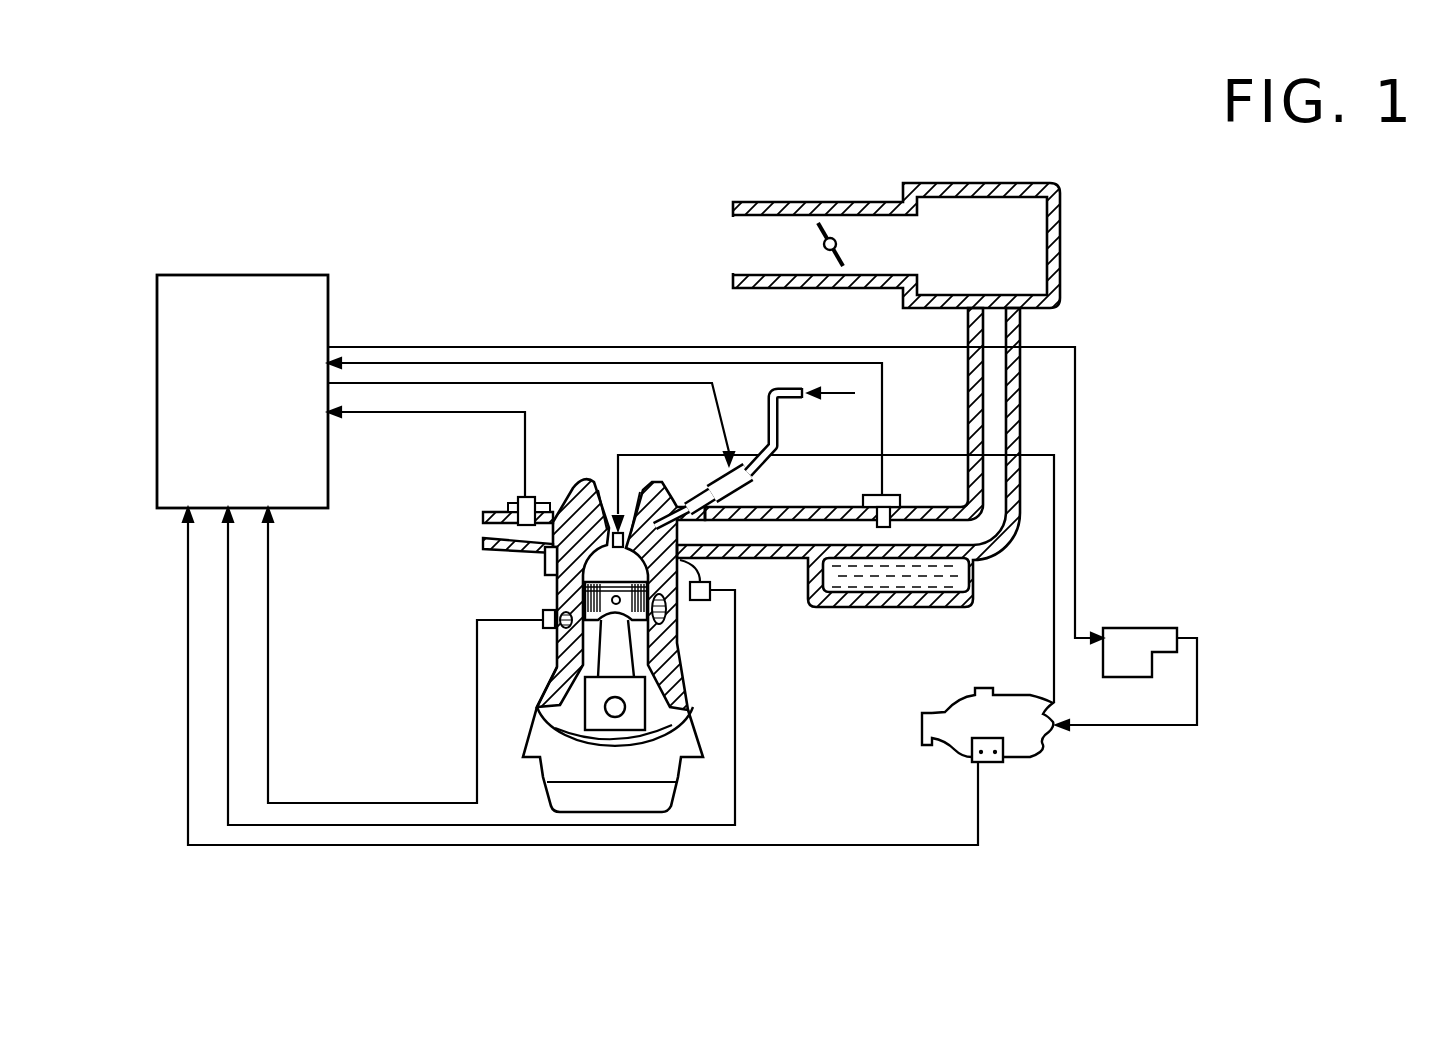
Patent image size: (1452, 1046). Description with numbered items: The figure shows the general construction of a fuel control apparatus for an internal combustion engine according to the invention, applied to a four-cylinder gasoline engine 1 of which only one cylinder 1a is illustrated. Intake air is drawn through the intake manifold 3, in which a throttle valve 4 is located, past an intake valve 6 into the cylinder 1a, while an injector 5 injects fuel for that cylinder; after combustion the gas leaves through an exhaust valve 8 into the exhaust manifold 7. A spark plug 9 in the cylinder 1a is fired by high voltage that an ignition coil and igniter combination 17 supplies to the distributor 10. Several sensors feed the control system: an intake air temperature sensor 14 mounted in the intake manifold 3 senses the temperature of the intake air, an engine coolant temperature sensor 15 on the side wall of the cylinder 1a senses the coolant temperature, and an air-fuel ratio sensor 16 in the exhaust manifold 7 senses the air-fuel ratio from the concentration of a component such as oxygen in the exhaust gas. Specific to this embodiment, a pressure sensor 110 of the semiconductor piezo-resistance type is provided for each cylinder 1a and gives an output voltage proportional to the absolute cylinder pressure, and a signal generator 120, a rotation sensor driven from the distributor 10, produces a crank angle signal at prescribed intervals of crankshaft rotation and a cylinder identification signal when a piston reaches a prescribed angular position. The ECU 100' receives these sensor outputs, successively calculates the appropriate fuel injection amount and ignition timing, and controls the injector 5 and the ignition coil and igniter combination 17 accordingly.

The engine 1 is at (536, 677).
The cylinder 1a is at (603, 570).
The intake manifold 3 is at (762, 560).
The throttle valve 4 is at (829, 238).
The injector 5 is at (747, 490).
The intake valve 6 is at (612, 520).
The exhaust manifold 7 is at (486, 552).
The exhaust valve 8 is at (568, 487).
The spark plug 9 is at (606, 500).
The distributor 10 is at (958, 738).
The intake air temperature sensor 14 is at (900, 493).
The engine coolant temperature sensor 15 is at (543, 628).
The air-fuel ratio sensor 16 is at (518, 500).
The ignition coil and igniter combination 17 is at (1125, 630).
The ECU 100' is at (284, 391).
The pressure sensor 110 is at (700, 600).
The signal generator 120 is at (995, 764).